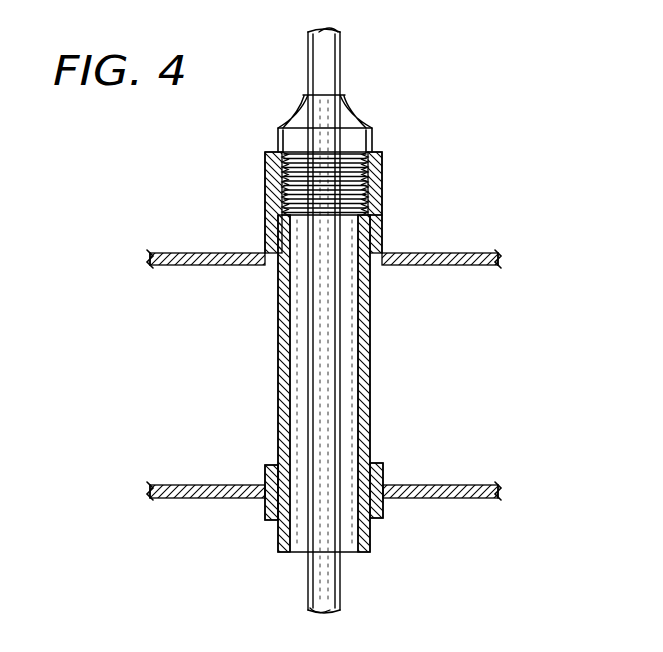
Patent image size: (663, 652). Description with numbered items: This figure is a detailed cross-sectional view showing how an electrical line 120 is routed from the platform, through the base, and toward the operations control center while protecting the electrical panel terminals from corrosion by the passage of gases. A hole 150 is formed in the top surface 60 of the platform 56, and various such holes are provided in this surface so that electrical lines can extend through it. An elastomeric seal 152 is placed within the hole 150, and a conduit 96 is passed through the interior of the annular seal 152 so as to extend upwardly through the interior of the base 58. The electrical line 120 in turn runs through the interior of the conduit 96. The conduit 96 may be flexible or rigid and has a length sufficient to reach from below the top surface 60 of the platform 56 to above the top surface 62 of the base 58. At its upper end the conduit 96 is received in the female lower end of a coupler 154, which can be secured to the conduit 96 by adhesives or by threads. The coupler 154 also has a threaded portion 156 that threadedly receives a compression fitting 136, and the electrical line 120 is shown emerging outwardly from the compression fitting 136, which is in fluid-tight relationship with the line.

The electrical line 120 is at (337, 70).
The compression fitting 136 is at (362, 120).
The coupler 154 is at (272, 197).
The threaded portion 156 is at (365, 178).
The base 58 is at (242, 280).
The top surface of the base 62 is at (430, 253).
The conduit 96 is at (322, 383).
The elastomeric seal 152 is at (265, 465).
The hole 150 is at (383, 463).
The top surface of the platform 60 is at (447, 487).
The platform 56 is at (230, 498).